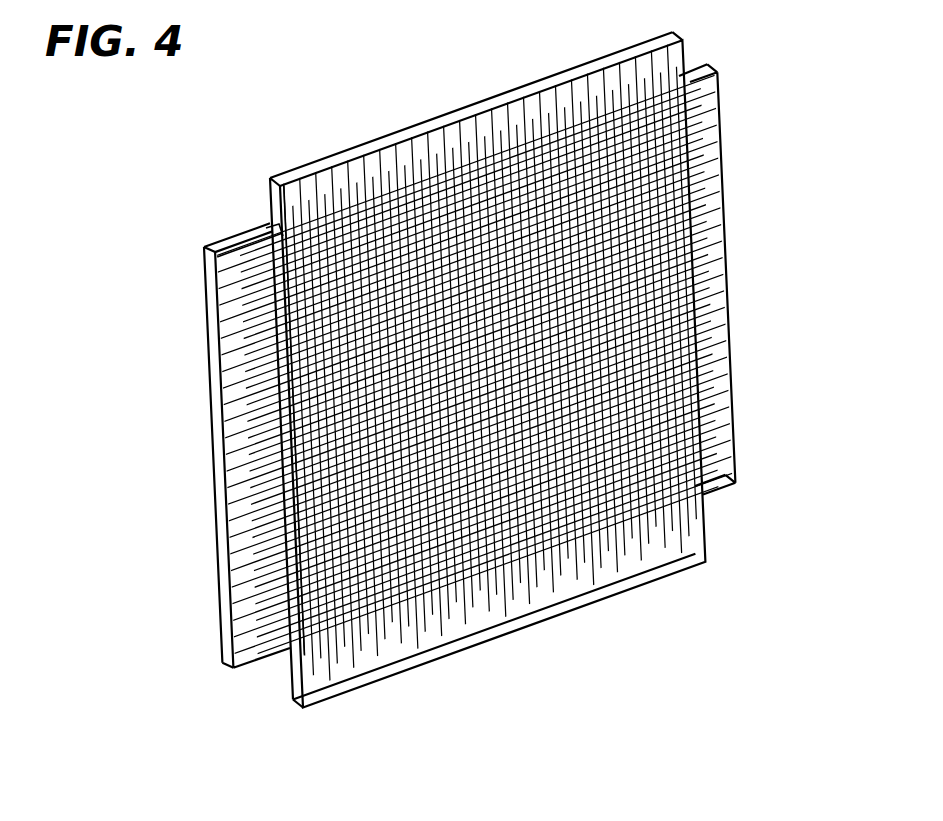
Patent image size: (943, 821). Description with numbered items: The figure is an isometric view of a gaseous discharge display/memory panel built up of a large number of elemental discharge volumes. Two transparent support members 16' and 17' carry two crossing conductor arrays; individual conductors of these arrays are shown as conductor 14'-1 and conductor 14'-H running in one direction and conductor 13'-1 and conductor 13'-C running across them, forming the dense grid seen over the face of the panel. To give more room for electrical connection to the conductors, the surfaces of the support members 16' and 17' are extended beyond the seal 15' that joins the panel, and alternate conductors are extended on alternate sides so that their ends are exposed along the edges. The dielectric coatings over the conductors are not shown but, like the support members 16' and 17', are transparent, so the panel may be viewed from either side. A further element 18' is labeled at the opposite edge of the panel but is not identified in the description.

The support member 17' is at (487, 367).
The right edge strip 18' is at (735, 259).
The support member 16' is at (202, 445).
The seal 15' is at (223, 183).
The conductor of conductor array 14'-1 is at (190, 228).
The conductor of conductor array 14'-H is at (434, 448).
The conductor of conductor array 13'-1 is at (241, 456).
The conductor of conductor array 13'-C is at (563, 410).